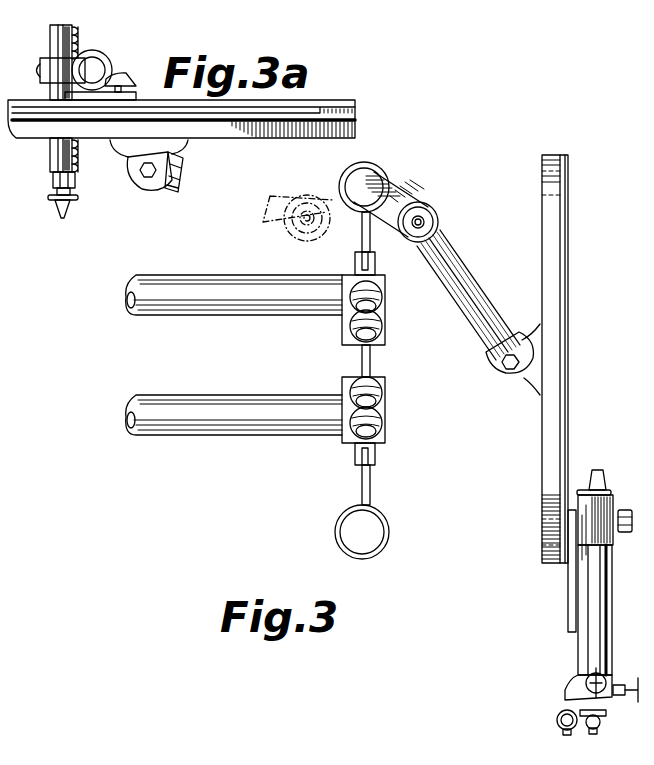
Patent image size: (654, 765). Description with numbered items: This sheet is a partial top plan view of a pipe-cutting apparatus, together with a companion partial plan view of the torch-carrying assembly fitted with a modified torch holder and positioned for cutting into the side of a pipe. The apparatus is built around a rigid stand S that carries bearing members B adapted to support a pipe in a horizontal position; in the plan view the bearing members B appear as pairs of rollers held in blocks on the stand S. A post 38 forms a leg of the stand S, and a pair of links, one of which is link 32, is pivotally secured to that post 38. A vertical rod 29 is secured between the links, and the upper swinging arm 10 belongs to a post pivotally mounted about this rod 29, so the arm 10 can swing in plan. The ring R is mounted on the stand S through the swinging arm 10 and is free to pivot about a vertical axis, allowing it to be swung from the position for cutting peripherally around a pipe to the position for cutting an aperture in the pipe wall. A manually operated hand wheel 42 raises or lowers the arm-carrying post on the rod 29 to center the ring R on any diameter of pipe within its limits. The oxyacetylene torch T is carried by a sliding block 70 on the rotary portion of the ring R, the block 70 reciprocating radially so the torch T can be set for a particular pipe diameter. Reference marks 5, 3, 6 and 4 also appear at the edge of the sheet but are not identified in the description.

In FIG. 3A, the upper swinging arm 10 is at (165, 190).
In FIG. 3, the upper swinging arm 10 is at (470, 290).
In FIG. 3, the post 38 is at (373, 164).
In FIG. 3, the link 32 is at (340, 192).
In FIG. 3, the vertical rod 29 is at (440, 216).
In FIG. 3, the bearing members B is at (387, 397).
In FIG. 3, the stand S is at (183, 398).
In FIG. 3, the ring R is at (540, 499).
In FIG. 3, the sliding block 70 is at (568, 606).
In FIG. 3, the oxyacetylene torch T is at (590, 648).
In FIG. 3A, the part 5 is at (3, 169).
In FIG. 3A, the part 3 is at (3, 219).
In FIG. 3, the part 6 is at (3, 459).
In FIG. 3, the hand wheel 42 is at (11, 509).
In FIG. 3, the part 4 is at (3, 605).